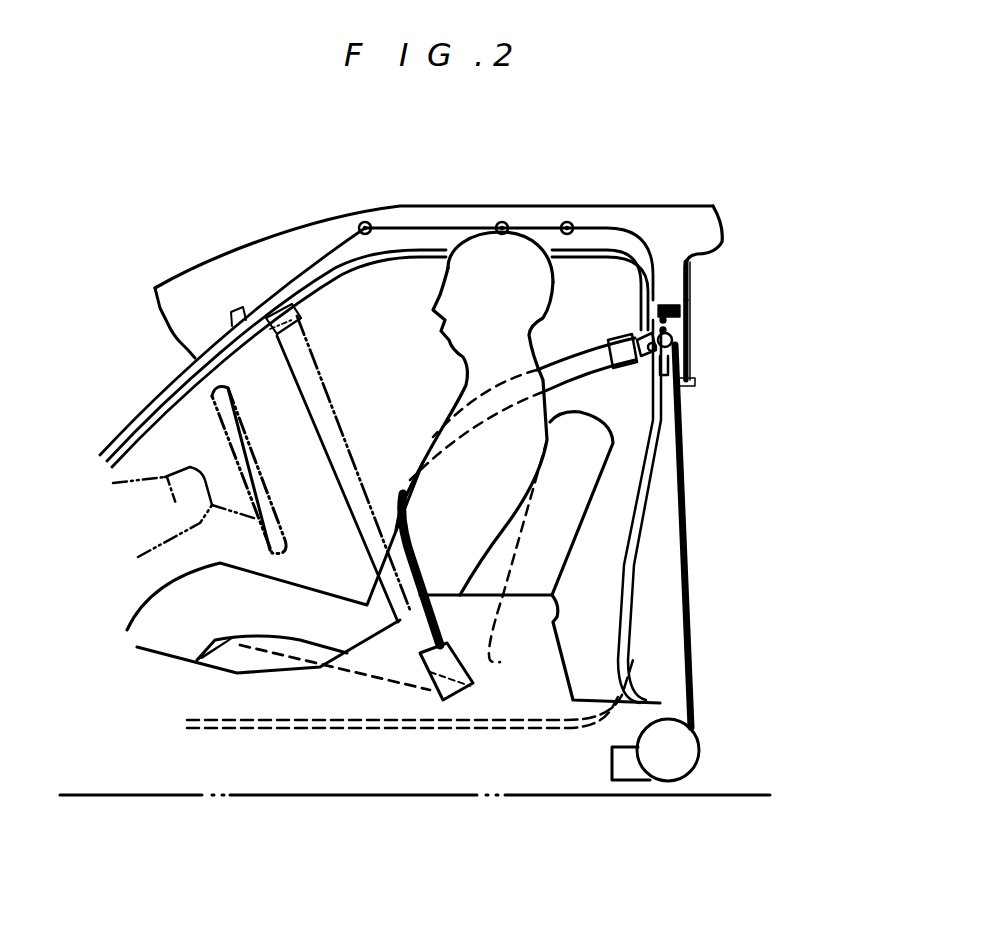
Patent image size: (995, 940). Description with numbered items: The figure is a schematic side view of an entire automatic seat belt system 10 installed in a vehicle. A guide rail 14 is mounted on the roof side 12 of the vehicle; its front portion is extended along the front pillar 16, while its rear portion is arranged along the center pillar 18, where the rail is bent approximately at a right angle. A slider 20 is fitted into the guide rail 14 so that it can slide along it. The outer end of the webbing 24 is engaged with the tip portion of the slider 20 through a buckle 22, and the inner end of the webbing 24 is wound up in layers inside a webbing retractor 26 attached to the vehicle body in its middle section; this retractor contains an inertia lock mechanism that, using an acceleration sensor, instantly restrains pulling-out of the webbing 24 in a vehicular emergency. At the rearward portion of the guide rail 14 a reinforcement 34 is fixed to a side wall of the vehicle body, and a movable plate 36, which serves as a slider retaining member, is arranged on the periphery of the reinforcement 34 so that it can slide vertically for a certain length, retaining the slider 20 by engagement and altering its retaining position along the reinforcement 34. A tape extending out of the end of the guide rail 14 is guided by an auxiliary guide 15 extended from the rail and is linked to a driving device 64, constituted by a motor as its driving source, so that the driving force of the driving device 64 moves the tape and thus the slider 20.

The vehicle body 10 is at (411, 410).
The roof side 12 is at (402, 212).
The guide rail 14 is at (484, 222).
The auxiliary guide 15 is at (690, 593).
The front pillar 16 is at (198, 282).
The center pillar 18 is at (672, 270).
The slider 20 is at (650, 335).
The buckle 22 is at (621, 368).
The webbing 24 is at (583, 357).
The webbing retractor 26 is at (468, 672).
The reinforcement 34 is at (690, 283).
The movable plate 36 is at (692, 383).
The driving device 64 is at (668, 785).